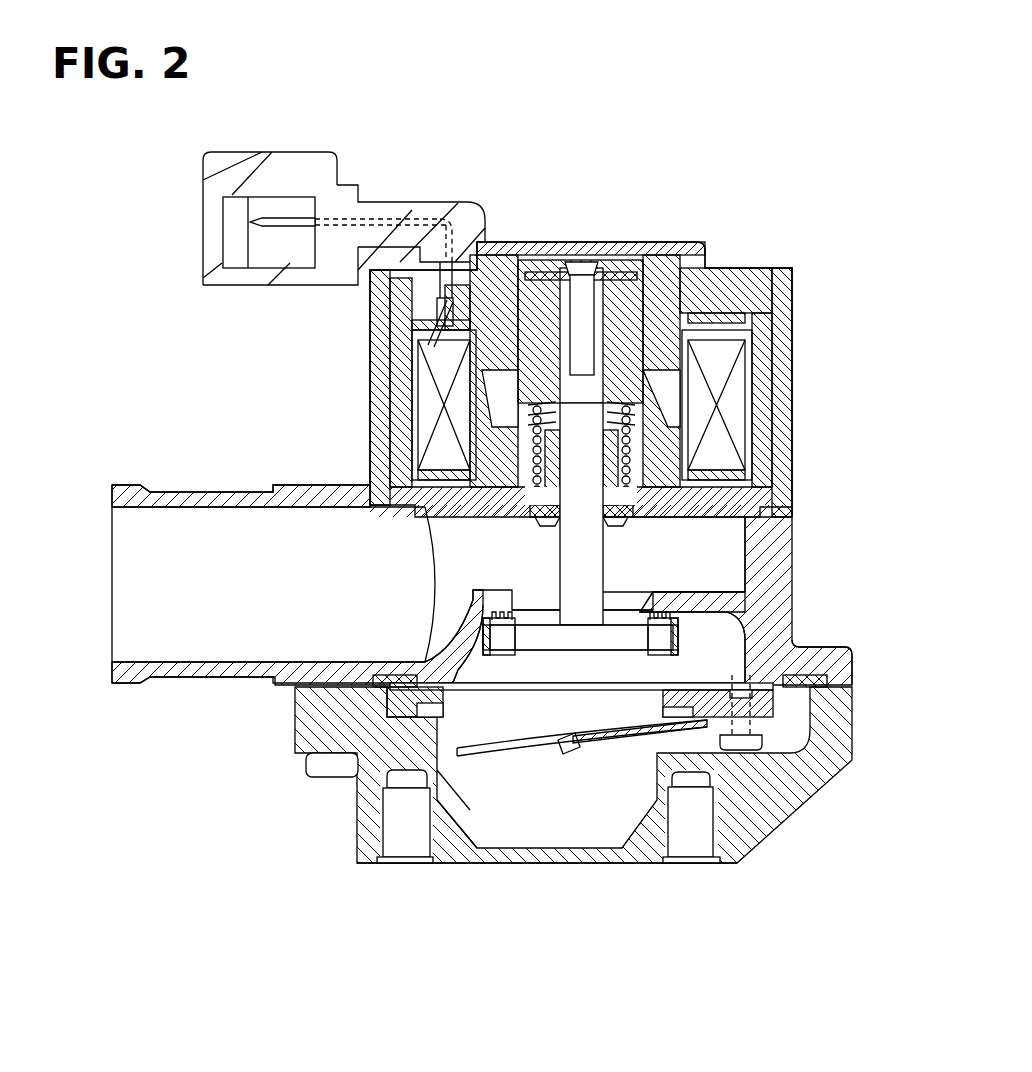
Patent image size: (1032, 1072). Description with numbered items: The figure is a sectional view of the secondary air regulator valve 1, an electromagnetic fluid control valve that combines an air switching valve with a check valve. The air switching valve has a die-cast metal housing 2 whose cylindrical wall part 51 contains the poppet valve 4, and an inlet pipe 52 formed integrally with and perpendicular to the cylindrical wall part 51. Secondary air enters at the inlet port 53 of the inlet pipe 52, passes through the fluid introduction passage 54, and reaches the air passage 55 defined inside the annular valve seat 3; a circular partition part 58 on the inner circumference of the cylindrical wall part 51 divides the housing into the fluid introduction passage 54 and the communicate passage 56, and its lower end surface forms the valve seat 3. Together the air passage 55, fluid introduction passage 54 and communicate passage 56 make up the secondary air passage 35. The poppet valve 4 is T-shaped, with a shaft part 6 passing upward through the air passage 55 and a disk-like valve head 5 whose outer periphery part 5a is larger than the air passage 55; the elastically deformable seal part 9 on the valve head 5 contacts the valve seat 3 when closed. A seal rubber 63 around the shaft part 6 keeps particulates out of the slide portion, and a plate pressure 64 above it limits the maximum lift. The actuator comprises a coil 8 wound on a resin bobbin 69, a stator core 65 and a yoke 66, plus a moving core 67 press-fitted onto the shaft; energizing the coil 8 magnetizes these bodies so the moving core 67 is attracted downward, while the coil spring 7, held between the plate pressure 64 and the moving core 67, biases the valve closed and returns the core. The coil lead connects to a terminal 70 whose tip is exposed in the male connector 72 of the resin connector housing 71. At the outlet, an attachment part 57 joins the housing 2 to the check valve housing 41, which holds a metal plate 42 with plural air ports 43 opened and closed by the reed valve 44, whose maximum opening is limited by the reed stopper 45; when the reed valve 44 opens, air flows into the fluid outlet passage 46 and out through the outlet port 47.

The secondary air regulator valve 1 is at (754, 220).
The housing 2 is at (777, 527).
The valve seat 3 is at (740, 640).
The poppet valve 4 is at (522, 652).
The valve head 5 is at (577, 633).
The outer periphery part 5a is at (443, 710).
The shaft part 6 is at (585, 547).
The coil spring 7 is at (540, 420).
The coil 8 is at (718, 380).
The seal part 9 is at (465, 695).
The secondary air passage 35 is at (715, 548).
The housing 41 is at (767, 797).
The metal plate 42 is at (800, 718).
The air ports 43 is at (543, 710).
The reed valve 44 is at (373, 785).
The reed stopper 45 is at (605, 735).
The fluid outlet passage 46 is at (490, 833).
The outlet port 47 is at (497, 867).
The cylindrical wall part 51 is at (780, 410).
The inlet pipe 52 is at (167, 490).
The inlet port 53 is at (104, 588).
The fluid introduction passage 54 is at (443, 535).
The air passage 55 is at (627, 590).
The communicate passage 56 is at (823, 655).
The attachment part 57 is at (843, 675).
The partition part 58 is at (707, 600).
The seal rubber 63 is at (467, 520).
The plate pressure 64 is at (540, 460).
The stator core 65 is at (718, 466).
The yoke 66 is at (752, 300).
The moving core 67 is at (617, 295).
The bobbin 69 is at (447, 326).
The terminal 70 is at (278, 222).
The connector housing 71 is at (441, 203).
The male connector 72 is at (236, 172).